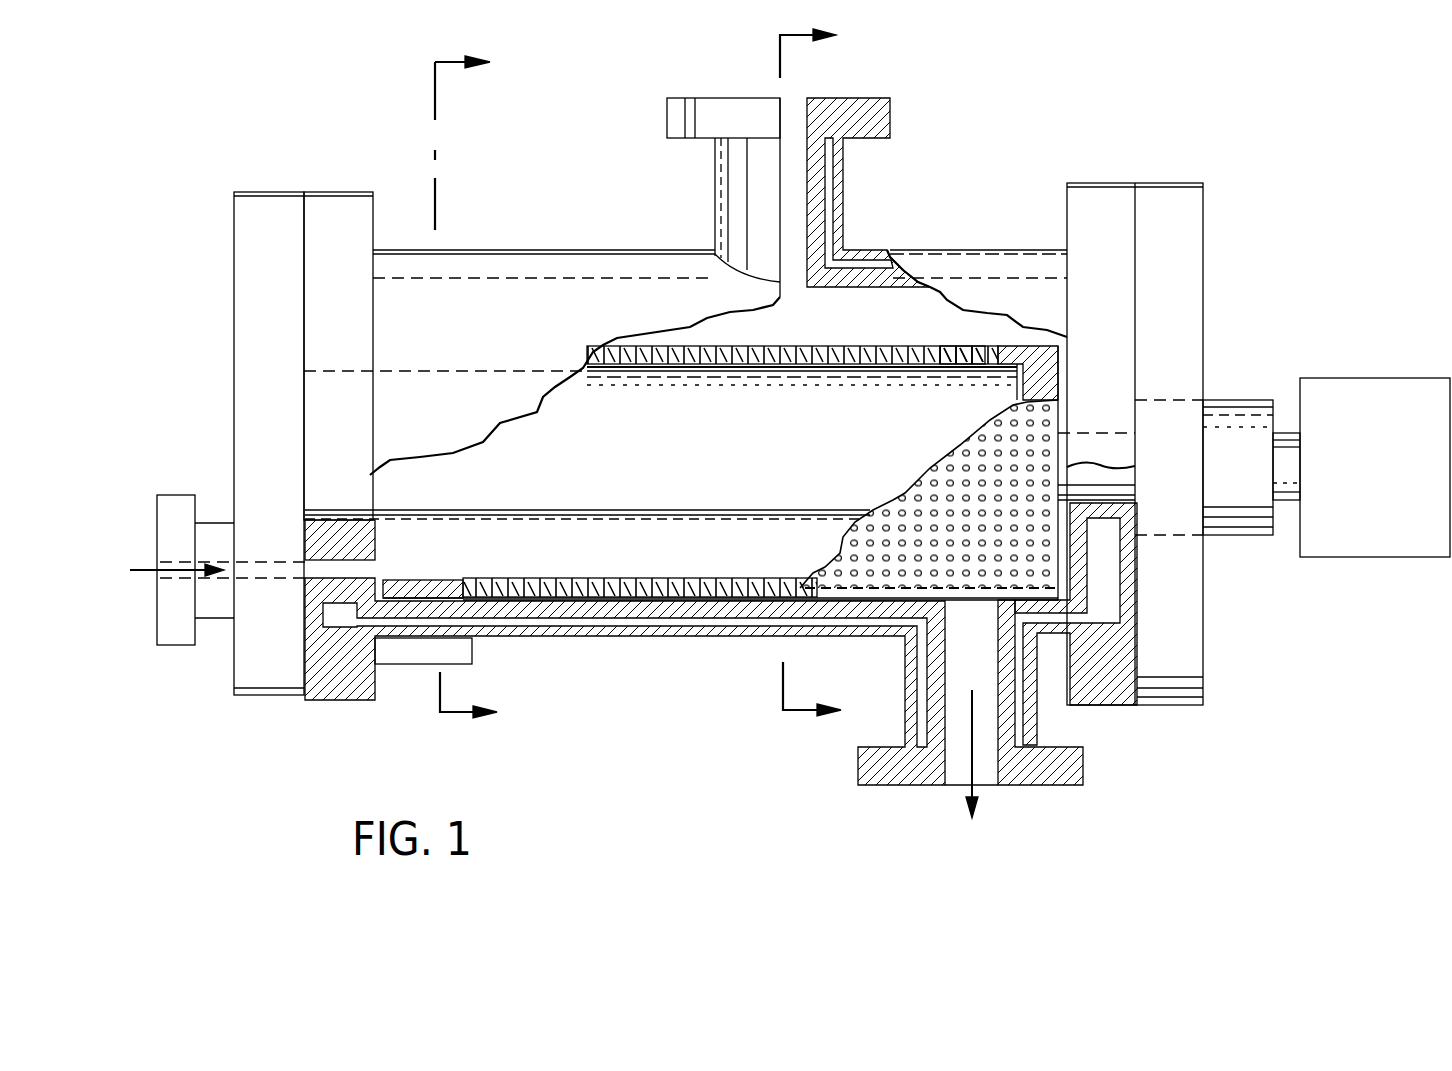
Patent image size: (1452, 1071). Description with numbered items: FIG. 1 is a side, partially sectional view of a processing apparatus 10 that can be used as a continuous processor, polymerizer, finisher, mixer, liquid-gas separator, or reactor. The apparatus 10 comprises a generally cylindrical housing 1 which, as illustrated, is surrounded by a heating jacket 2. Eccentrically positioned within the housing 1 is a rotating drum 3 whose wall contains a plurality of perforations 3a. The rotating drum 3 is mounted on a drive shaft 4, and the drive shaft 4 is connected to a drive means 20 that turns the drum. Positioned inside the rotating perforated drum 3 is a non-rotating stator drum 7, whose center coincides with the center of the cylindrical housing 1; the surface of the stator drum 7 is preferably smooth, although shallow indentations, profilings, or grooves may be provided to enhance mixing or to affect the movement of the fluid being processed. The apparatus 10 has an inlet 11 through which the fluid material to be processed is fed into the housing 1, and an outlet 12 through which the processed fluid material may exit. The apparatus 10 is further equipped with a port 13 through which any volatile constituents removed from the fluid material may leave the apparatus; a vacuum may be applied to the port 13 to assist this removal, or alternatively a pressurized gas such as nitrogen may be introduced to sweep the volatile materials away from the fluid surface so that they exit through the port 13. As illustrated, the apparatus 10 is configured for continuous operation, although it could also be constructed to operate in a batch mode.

The housing wall 1 is at (850, 277).
The annular passage 2 is at (878, 258).
The screen 3 is at (927, 346).
The screen wires 3a is at (945, 346).
The shaft 4 is at (1287, 433).
The inner tube / rotor 7 is at (520, 515).
The apparatus 10 is at (1095, 136).
The inlet 11 is at (157, 575).
The outlet 12 is at (987, 773).
The inlet port 13 is at (792, 107).
The motor 20 is at (1355, 378).